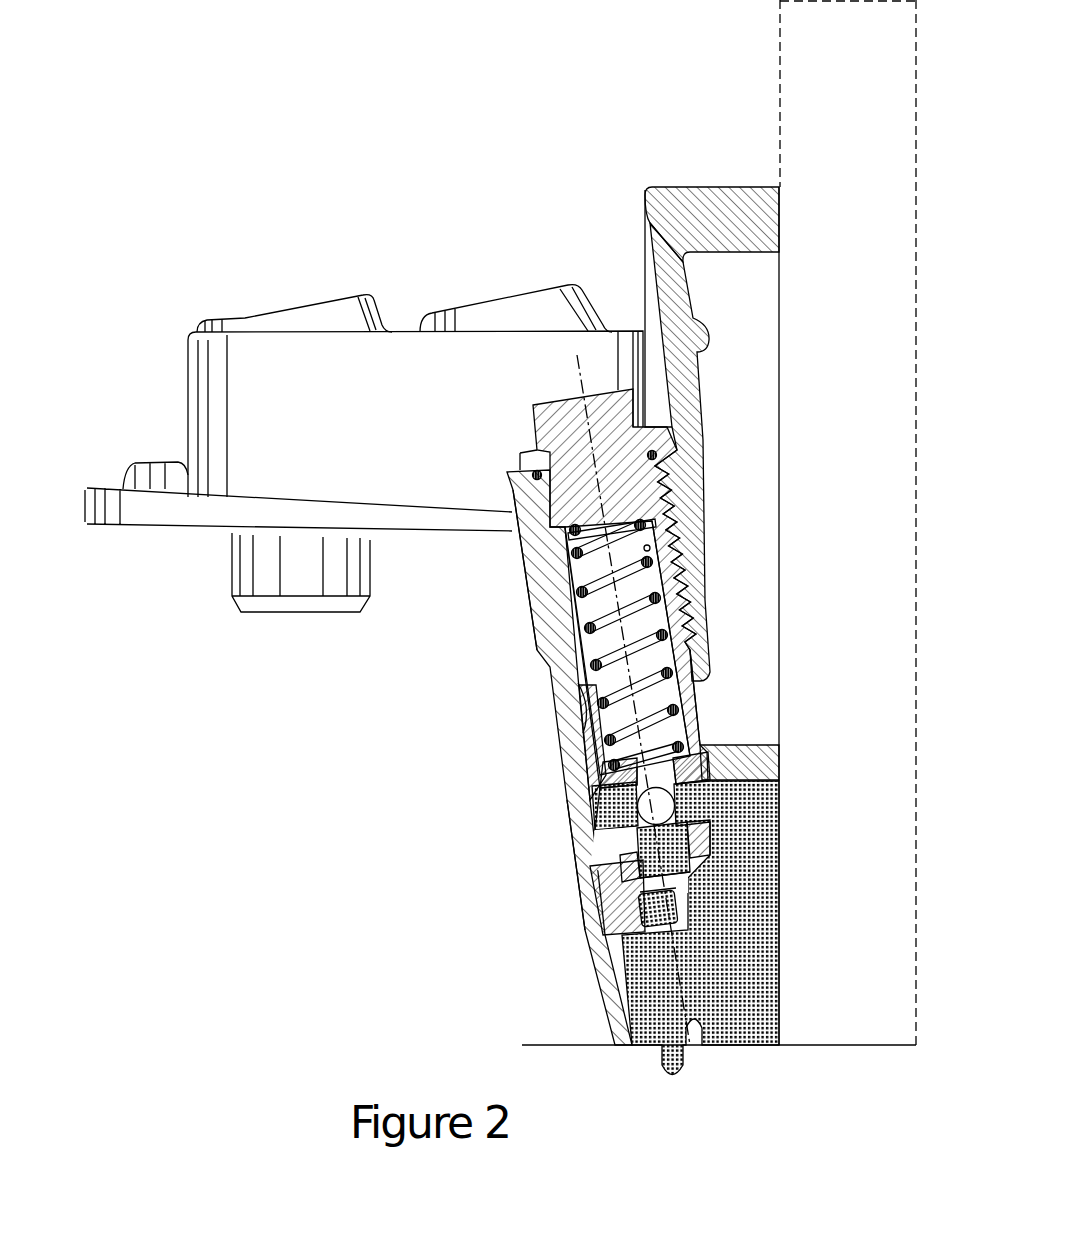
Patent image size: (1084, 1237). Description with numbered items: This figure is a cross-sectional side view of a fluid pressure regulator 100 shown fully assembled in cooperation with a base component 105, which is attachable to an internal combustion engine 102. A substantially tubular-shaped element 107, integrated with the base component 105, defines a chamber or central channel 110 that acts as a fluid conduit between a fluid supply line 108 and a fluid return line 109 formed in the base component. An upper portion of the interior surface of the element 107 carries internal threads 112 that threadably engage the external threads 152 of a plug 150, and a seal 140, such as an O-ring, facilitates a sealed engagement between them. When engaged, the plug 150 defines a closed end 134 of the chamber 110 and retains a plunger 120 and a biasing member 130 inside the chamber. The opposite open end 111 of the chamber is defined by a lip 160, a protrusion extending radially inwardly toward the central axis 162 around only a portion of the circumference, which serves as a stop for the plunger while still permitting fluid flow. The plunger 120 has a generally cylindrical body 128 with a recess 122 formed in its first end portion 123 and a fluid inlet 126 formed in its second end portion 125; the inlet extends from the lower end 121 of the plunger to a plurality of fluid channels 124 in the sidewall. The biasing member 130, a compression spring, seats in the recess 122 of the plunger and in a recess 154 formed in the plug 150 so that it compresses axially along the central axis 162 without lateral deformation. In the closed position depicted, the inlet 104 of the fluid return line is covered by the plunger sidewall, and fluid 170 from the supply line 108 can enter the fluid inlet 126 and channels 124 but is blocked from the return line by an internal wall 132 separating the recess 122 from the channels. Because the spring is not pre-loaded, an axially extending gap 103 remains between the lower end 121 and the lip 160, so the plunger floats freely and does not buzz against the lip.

The fluid pressure regulator 100 is at (540, 706).
The internal combustion engine 102 is at (780, 58).
The axially extending gap 103 is at (640, 877).
The inlet of the fluid return line 104 is at (700, 690).
The base component 105 is at (707, 192).
The tubular-shaped element 107 is at (582, 745).
The fluid supply line 108 is at (719, 1005).
The fluid return line 109 is at (739, 733).
The chamber 110 is at (573, 615).
The open end of the chamber 111 is at (663, 889).
The internal threads 112 is at (530, 520).
The plunger 120 is at (714, 850).
The lower end of the plunger 121 is at (633, 882).
The recess 122 is at (668, 676).
The first end portion 123 is at (700, 606).
The fluid channels 124 is at (676, 803).
The second end portion 125 is at (650, 818).
The fluid inlet 126 is at (620, 868).
The body 128 is at (600, 775).
The biasing member 130 is at (586, 668).
The internal wall 132 is at (655, 752).
The closed end of the chamber 134 is at (652, 535).
The seal 140 is at (652, 455).
The plug 150 is at (550, 392).
The external threads 152 is at (545, 562).
The recess 154 is at (600, 528).
The lip 160 is at (645, 915).
The central axis 162 is at (577, 355).
The fluid 170 is at (747, 1002).